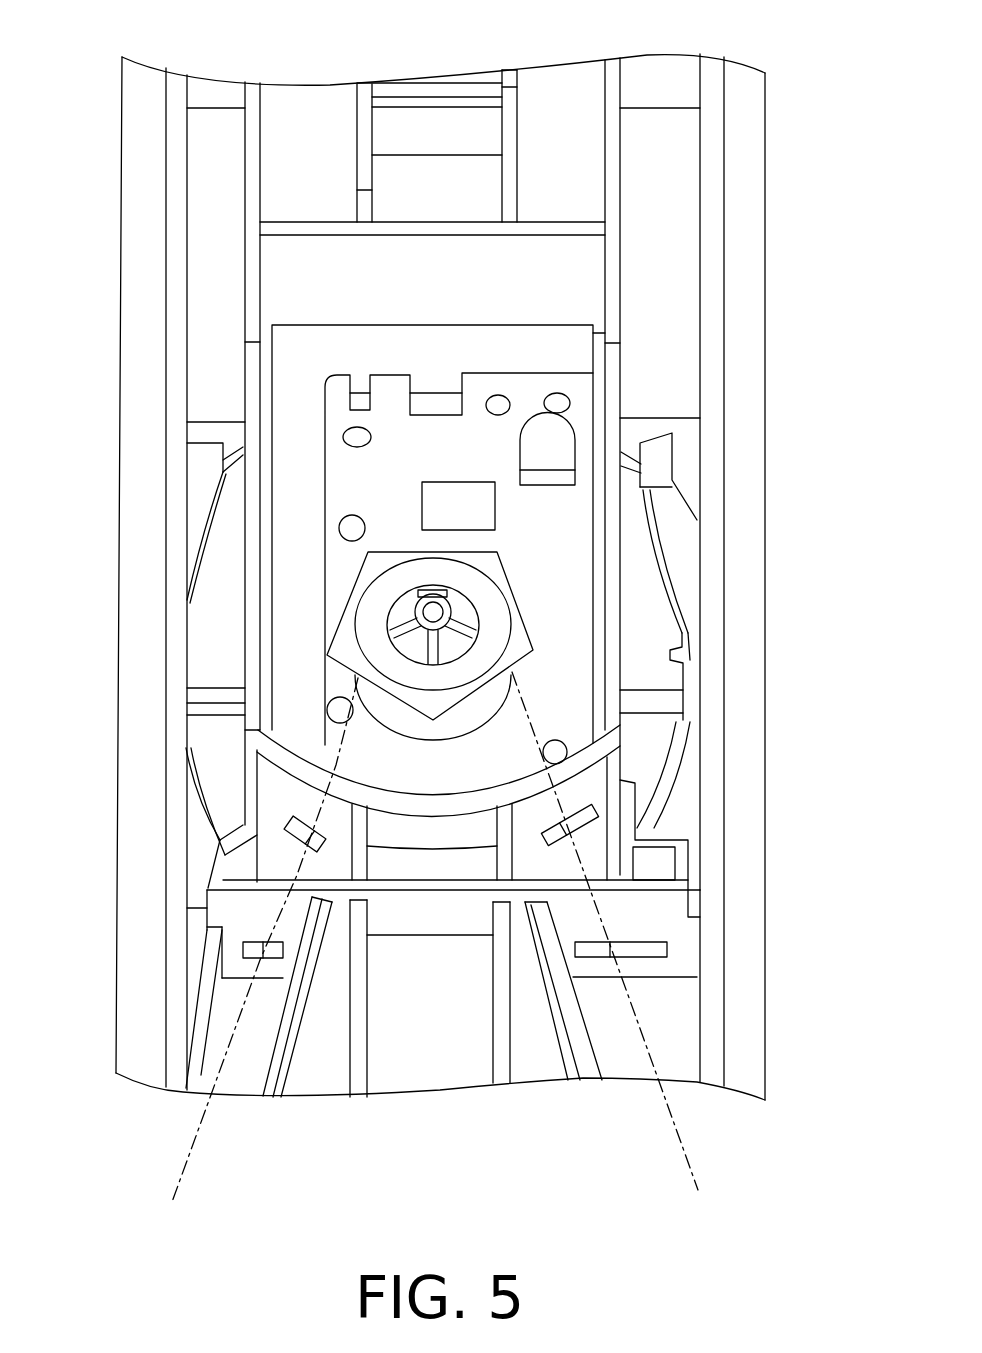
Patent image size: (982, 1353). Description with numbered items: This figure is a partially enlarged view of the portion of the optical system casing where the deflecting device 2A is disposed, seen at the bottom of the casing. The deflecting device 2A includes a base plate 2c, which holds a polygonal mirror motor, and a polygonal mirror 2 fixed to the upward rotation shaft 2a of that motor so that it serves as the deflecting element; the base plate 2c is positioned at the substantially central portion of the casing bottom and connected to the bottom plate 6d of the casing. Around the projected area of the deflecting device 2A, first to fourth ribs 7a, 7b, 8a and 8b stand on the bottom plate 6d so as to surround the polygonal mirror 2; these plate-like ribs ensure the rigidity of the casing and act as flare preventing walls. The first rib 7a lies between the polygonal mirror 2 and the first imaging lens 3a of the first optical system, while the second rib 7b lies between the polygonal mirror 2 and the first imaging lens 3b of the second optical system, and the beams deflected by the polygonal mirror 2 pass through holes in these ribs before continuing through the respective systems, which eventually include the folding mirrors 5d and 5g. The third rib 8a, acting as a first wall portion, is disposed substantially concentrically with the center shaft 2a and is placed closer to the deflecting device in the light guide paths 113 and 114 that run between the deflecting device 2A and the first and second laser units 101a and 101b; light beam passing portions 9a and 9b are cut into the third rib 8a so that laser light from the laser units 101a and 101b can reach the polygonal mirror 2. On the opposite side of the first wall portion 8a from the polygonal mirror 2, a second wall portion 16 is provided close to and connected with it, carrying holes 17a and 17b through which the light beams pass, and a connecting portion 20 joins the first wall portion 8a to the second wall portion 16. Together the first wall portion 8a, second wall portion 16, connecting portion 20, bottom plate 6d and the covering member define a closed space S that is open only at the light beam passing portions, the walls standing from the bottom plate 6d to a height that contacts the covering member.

The polygonal mirror 2 is at (505, 568).
The rotation shaft 2a is at (410, 590).
The deflecting device 2A is at (540, 583).
The base plate 2c is at (560, 515).
The first imaging lens 3a is at (200, 511).
The first imaging lens 3b is at (690, 735).
The folding mirror 5d is at (135, 967).
The folding mirror 5g is at (743, 960).
The bottom plate 6d is at (562, 87).
The first rib 7a is at (250, 436).
The second rib 7b is at (620, 428).
The third rib 8a is at (413, 793).
The fourth rib 8b is at (327, 257).
The light beam passing portion 9a is at (333, 878).
The light beam passing portion 9b is at (545, 838).
The second wall portion 16 is at (437, 940).
The hole 17a is at (243, 968).
The hole 17b is at (643, 965).
The connecting portion 20 is at (520, 877).
The closed space S is at (273, 867).
The light guide path 113 is at (200, 1075).
The light guide path 114 is at (677, 1063).
The first laser unit 101a is at (200, 1173).
The second laser unit 101b is at (675, 1127).